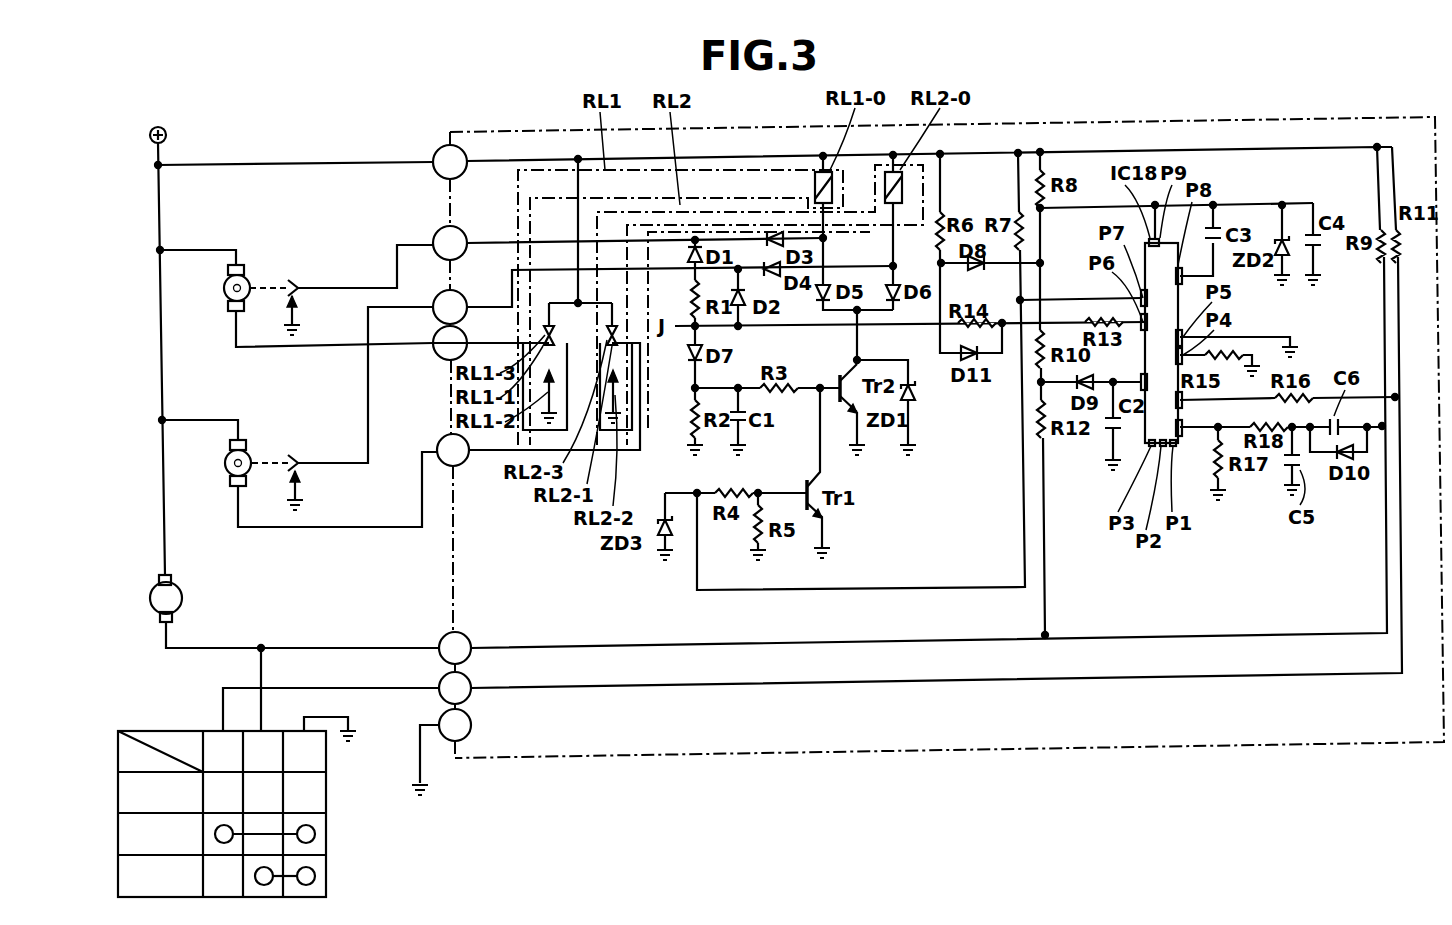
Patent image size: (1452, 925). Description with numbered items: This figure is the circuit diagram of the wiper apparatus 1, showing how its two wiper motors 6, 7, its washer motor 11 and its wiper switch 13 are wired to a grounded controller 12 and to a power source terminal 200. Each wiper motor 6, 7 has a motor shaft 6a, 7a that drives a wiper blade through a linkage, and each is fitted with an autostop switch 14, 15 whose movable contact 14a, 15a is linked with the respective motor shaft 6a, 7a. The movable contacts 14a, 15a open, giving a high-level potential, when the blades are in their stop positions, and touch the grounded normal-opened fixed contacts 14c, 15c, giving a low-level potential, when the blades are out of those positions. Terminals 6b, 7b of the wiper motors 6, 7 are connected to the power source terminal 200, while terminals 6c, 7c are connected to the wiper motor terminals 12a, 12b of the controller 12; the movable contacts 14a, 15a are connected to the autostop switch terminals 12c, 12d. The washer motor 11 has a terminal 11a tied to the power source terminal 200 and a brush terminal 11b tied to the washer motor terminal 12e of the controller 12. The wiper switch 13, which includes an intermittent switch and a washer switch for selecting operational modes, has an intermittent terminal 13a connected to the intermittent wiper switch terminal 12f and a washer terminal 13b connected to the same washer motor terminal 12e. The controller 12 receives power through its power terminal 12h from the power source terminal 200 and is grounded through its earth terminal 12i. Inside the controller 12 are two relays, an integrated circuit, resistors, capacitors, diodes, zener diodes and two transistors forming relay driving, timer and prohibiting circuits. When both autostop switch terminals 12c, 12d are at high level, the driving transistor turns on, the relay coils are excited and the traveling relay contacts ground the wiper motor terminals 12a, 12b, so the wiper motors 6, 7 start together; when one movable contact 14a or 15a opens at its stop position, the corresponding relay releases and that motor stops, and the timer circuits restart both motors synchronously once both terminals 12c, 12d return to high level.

The wiper apparatus 1 is at (718, 128).
The power source terminal 200 is at (168, 134).
The wiper motor 6 is at (296, 275).
The motor shaft 6a is at (222, 291).
The terminal 6b is at (232, 265).
The terminal 6c is at (228, 308).
The autostop switch 14 is at (341, 261).
The movable contact 14a is at (290, 276).
The normal-opened fixed contact 14c is at (300, 316).
The wiper motor 7 is at (299, 452).
The motor shaft 7a is at (224, 466).
The terminal 7b is at (234, 440).
The terminal 7c is at (230, 483).
The autostop switch 15 is at (342, 408).
The movable contact 15a is at (290, 452).
The normal-opened fixed contact 15c is at (300, 490).
The washer motor 11 is at (186, 585).
The terminal 11a is at (160, 578).
The brush terminal 11b is at (175, 615).
The wiper switch 13 is at (278, 772).
The intermittent terminal 13a is at (210, 731).
The washer terminal 13b is at (273, 731).
The controller 12 is at (441, 420).
The power terminal 12h is at (440, 150).
The autostop switch terminal 12c is at (462, 230).
The autostop switch terminal 12d is at (435, 298).
The wiper motor terminal 12a is at (440, 357).
The wiper motor terminal 12b is at (443, 438).
The washer motor terminal 12e is at (443, 636).
The intermittent wiper switch terminal 12f is at (442, 680).
The earth terminal 12i is at (470, 720).